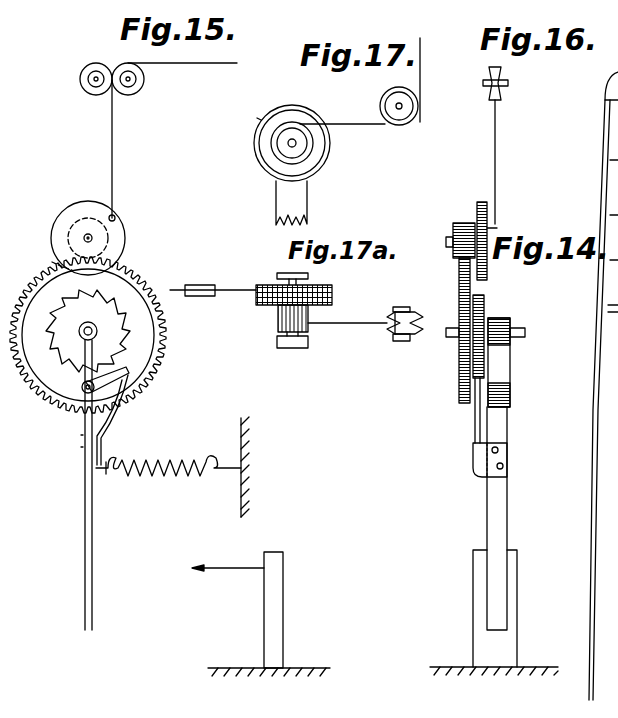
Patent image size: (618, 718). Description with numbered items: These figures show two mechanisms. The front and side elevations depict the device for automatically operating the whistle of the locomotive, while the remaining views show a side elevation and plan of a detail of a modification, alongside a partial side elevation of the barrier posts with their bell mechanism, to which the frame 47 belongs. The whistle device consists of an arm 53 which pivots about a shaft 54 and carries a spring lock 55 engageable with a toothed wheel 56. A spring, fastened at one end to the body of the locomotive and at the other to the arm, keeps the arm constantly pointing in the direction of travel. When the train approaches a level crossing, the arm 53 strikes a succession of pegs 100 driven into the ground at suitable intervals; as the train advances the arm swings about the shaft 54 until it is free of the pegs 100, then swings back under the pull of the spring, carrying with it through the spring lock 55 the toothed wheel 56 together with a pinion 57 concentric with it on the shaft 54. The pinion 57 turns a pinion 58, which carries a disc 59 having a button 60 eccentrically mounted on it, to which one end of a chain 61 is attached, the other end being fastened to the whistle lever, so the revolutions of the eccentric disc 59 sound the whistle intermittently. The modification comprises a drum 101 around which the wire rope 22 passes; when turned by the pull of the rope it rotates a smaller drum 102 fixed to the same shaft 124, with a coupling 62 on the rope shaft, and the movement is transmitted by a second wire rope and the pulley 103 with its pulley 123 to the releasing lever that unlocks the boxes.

In FIG. 17, the wire rope 22 is at (260, 118).
In FIG. 17A, the wire rope 22 is at (236, 284).
In FIG. 14, the frame 47 is at (603, 386).
In FIG. 15, the arm 53 is at (84, 540).
In FIG. 16, the arm 53 is at (501, 522).
In FIG. 15, the shaft 54 is at (86, 320).
In FIG. 16, the shaft 54 is at (512, 336).
In FIG. 15, the spring lock 55 is at (108, 377).
In FIG. 16, the spring lock 55 is at (493, 458).
In FIG. 15, the toothed wheel 56 is at (68, 343).
In FIG. 16, the toothed wheel 56 is at (478, 336).
In FIG. 15, the pinion 57 is at (33, 392).
In FIG. 16, the pinion 57 is at (461, 273).
In FIG. 15, the pinion 58 is at (62, 251).
In FIG. 16, the pinion 58 is at (462, 230).
In FIG. 15, the disc 59 is at (70, 214).
In FIG. 16, the disc 59 is at (480, 203).
In FIG. 15, the button 60 is at (115, 218).
In FIG. 16, the button 60 is at (497, 227).
In FIG. 15, the chain 61 is at (111, 154).
In FIG. 16, the chain 61 is at (496, 172).
In FIG. 17A, the coupling 62 is at (202, 287).
In FIG. 15, the pegs 100 is at (268, 629).
In FIG. 16, the pegs 100 is at (517, 627).
In FIG. 17, the drum 101 is at (272, 180).
In FIG. 17, the smaller drum 102 is at (314, 158).
In FIG. 17A, the smaller drum 102 is at (280, 318).
In FIG. 17, the pulley 103 is at (415, 119).
In FIG. 17A, the pulley 103 is at (430, 312).
In FIG. 17A, the pulley 123 is at (390, 340).
In FIG. 17, the shaft 124 is at (290, 144).
In FIG. 17A, the shaft 124 is at (283, 339).